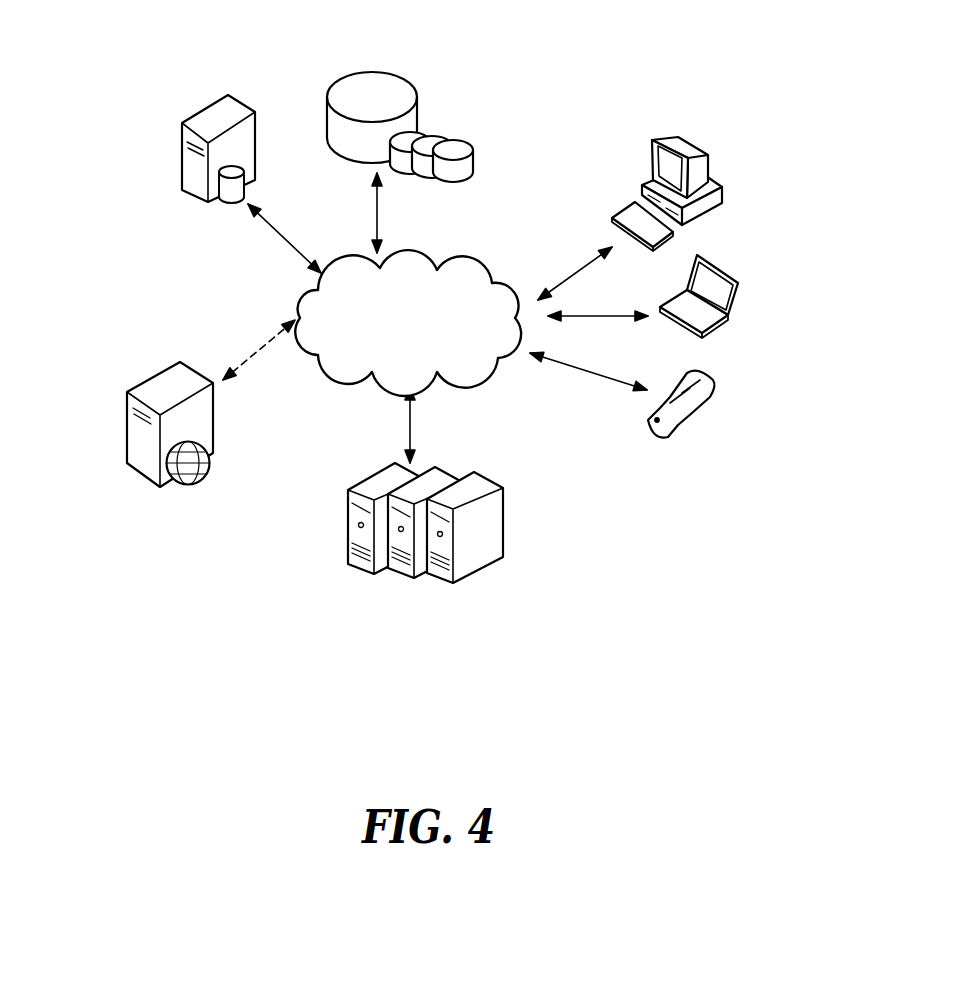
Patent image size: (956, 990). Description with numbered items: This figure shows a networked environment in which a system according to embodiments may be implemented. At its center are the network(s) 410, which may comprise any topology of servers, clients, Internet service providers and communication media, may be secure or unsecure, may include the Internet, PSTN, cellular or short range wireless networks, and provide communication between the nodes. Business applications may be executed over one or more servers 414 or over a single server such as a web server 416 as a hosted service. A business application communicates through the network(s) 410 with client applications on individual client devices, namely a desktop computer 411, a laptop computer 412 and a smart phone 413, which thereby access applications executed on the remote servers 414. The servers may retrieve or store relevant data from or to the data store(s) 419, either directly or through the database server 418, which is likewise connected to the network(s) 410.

The network(s) 410 is at (418, 247).
The desktop computer 411 is at (707, 128).
The laptop computer 412 is at (740, 255).
The smart phone 413 is at (710, 372).
The servers 414 is at (373, 470).
The single server (web server) 416 is at (148, 373).
The database server 418 is at (218, 212).
The data store(s) 419 is at (387, 50).